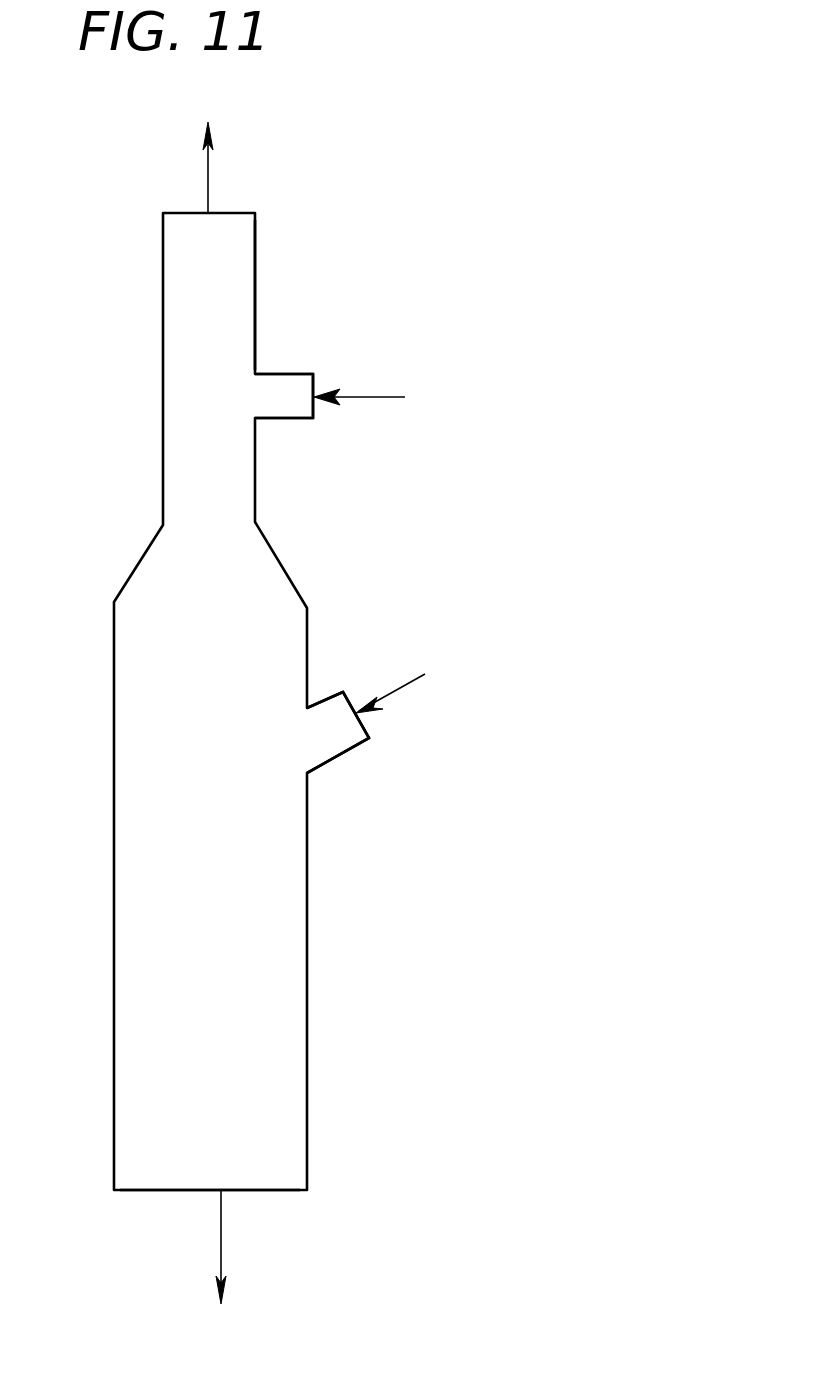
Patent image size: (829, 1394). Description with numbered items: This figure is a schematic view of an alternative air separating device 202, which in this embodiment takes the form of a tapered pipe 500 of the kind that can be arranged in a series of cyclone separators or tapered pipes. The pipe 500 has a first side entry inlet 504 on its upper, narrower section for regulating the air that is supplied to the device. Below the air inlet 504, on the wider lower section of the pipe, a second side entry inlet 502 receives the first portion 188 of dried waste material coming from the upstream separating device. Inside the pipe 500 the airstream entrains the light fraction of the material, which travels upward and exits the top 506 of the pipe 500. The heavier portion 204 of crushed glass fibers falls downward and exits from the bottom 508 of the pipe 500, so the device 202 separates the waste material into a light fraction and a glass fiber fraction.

The pipe 500 is at (288, 572).
The air separating device 202 is at (256, 288).
The first side entry inlet 504 is at (283, 420).
The first portion of dried waste material 188 is at (365, 395).
The second side entry inlet 502 is at (345, 753).
The bottom of the pipe 508 is at (303, 1173).
The top of the pipe 506 is at (210, 175).
The portion of crushed glass fibers 204 is at (221, 1227).